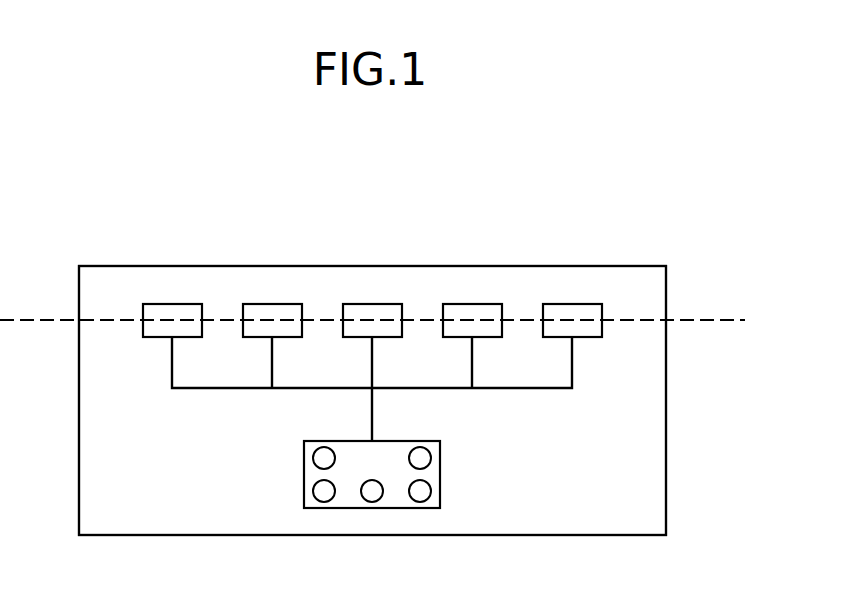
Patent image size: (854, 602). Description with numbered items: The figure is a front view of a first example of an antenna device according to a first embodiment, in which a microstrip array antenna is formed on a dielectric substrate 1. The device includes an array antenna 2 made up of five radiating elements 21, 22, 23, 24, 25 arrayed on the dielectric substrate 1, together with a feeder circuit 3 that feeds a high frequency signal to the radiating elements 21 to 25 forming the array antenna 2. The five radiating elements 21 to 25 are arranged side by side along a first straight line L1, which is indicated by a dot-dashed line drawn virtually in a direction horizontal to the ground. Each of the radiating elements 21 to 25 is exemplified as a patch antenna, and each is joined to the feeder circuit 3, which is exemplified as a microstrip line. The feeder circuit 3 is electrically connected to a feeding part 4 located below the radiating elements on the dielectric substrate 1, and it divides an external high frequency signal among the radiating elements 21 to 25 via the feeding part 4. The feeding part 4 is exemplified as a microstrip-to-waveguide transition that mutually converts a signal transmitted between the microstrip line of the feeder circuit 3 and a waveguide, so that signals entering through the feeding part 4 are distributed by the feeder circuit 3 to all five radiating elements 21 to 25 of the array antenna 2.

The dielectric substrate 1 is at (79, 401).
The array antenna 2 is at (340, 211).
The feeder circuit 3 is at (228, 389).
The feeding part 4 is at (372, 508).
The radiating element 21 is at (172, 304).
The radiating element 22 is at (272, 304).
The radiating element 23 is at (372, 304).
The radiating element 24 is at (472, 304).
The radiating element 25 is at (572, 304).
The first straight line L1 is at (709, 320).